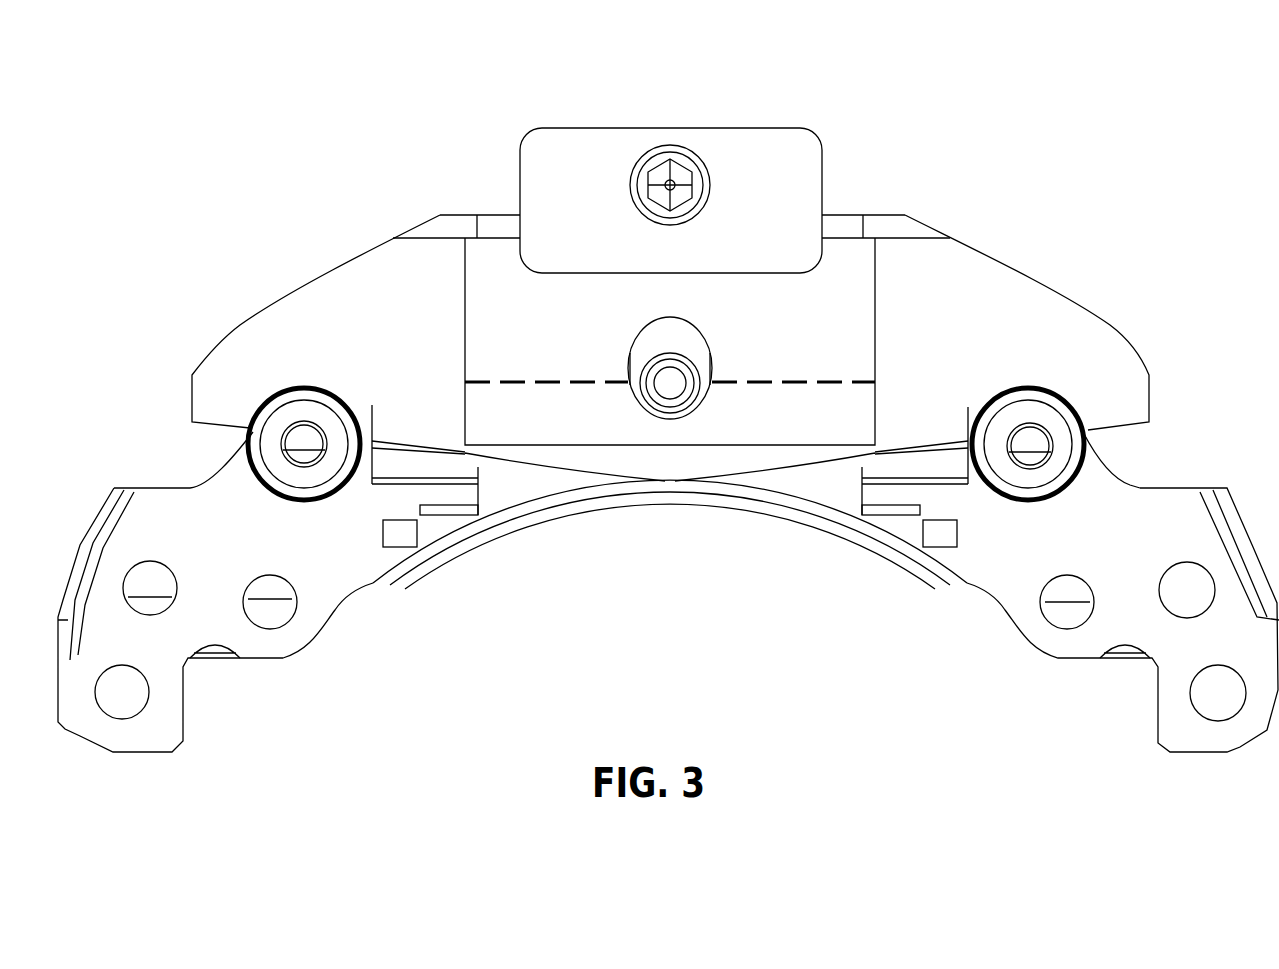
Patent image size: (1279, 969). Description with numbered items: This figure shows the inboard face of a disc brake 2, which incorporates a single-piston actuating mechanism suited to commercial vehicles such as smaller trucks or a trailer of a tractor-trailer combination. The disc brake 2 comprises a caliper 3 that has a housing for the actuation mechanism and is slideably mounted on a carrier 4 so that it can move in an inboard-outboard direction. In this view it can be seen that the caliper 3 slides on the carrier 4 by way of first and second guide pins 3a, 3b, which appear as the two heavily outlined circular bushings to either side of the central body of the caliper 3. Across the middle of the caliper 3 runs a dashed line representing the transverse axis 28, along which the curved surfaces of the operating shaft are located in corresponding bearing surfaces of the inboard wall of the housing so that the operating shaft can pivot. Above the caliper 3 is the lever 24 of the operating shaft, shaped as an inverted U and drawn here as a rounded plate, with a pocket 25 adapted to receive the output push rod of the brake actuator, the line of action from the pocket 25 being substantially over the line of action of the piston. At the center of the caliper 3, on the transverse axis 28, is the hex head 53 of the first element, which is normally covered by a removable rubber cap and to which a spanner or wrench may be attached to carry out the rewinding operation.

The disc brake 2 is at (922, 108).
The caliper 3 is at (988, 272).
The first guide pin 3a is at (1067, 417).
The second guide pin 3b is at (308, 410).
The carrier 4 is at (1180, 503).
The lever 24 is at (667, 163).
The pocket 25 is at (682, 192).
The transverse axis 28 is at (765, 385).
The hex head 53 is at (672, 385).